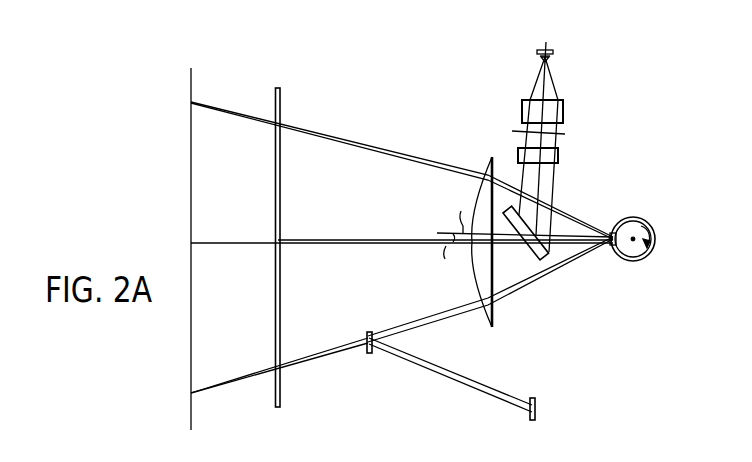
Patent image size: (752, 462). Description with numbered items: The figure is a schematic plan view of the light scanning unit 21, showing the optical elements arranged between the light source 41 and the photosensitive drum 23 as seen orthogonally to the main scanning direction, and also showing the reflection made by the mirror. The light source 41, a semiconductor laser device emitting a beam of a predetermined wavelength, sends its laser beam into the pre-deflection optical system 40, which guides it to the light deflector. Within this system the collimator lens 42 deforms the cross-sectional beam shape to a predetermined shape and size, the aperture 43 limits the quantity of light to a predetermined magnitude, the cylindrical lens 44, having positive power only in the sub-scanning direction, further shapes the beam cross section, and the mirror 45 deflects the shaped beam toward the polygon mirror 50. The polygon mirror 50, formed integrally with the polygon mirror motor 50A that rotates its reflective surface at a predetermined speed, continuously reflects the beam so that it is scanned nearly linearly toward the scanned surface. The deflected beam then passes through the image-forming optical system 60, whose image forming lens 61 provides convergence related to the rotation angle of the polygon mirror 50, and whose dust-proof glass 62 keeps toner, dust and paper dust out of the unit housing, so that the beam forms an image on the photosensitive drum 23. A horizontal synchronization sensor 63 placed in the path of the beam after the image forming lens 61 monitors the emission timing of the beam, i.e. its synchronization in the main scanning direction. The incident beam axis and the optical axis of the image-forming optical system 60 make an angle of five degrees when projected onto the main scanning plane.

The light scanning unit 21 is at (382, 80).
The photosensitive drum 23 is at (192, 426).
The pre-deflection optical system 40 is at (519, 222).
The light source 41 is at (556, 53).
The collimator lens 42 is at (564, 110).
The aperture 43 is at (566, 133).
The cylindrical lens 44 is at (559, 156).
The mirror 45 is at (528, 259).
The polygon mirror 50 is at (626, 262).
The polygon mirror motor 50A is at (637, 216).
The image-forming optical system 60 is at (381, 266).
The image forming lens 61 is at (492, 330).
The dust-proof glass 62 is at (299, 247).
The horizontal synchronization sensor 63 is at (537, 404).